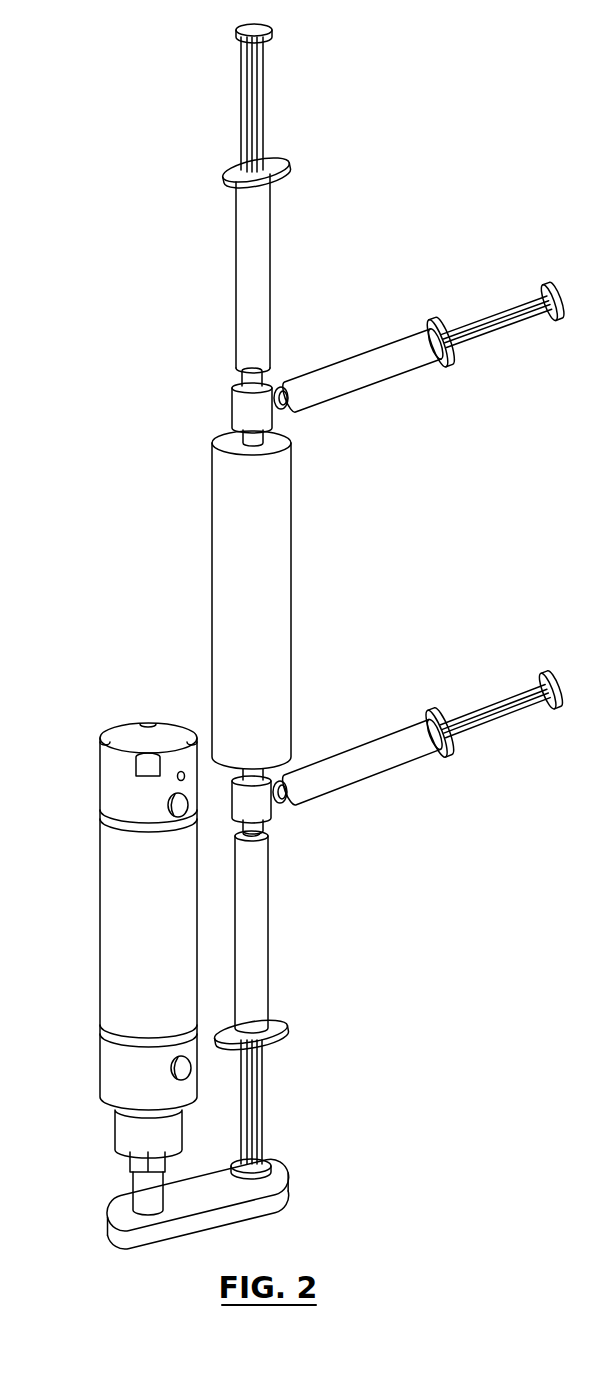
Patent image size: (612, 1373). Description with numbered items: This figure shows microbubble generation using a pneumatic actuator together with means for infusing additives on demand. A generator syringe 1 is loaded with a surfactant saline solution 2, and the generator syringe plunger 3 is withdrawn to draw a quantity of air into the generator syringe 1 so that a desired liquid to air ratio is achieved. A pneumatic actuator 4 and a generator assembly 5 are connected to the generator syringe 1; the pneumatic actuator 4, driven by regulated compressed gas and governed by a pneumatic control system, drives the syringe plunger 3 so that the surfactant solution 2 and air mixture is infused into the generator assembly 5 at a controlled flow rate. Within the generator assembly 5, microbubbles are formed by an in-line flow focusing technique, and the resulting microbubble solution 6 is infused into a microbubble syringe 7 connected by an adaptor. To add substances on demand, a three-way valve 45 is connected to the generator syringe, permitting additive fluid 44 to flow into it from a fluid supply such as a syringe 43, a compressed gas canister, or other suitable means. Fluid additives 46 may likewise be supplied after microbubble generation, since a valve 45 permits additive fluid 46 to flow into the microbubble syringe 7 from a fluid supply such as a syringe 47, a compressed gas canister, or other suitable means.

The generator syringe 1 is at (268, 923).
The surfactant saline solution 2 is at (253, 997).
The generator syringe plunger 3 is at (266, 1163).
The pneumatic actuator 4 is at (112, 872).
The generator assembly 5 is at (272, 628).
The microbubble solution 6 is at (253, 328).
The microbubble syringe 7 is at (272, 224).
The syringe 43 is at (426, 712).
The additive fluid 44 is at (392, 752).
The three-way valve 45 is at (250, 412).
The fluid additives 46 is at (385, 367).
The syringe 47 is at (430, 327).